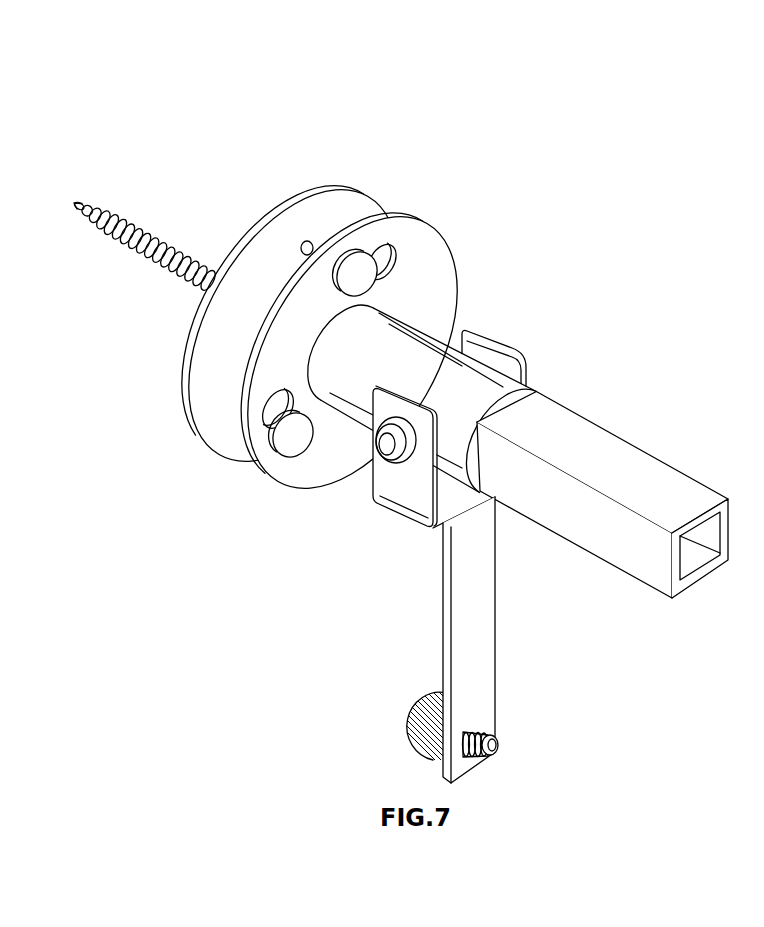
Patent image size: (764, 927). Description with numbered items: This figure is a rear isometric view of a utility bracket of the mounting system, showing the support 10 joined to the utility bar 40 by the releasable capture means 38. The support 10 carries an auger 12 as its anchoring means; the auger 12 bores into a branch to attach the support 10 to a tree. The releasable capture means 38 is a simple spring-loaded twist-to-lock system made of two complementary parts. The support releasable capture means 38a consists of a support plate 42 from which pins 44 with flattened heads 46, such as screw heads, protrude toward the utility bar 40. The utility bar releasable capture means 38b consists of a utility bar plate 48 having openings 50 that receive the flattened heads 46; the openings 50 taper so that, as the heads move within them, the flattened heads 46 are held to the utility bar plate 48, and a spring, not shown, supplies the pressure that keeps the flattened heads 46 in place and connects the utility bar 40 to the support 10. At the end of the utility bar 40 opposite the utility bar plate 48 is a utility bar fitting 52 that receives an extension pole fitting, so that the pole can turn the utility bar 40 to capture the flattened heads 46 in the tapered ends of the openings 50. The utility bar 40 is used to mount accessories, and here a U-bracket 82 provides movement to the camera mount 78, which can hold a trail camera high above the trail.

The support 10 is at (400, 398).
The auger 12 is at (146, 234).
The releasable capture means 38 is at (329, 275).
The support releasable capture means 38a is at (293, 255).
The utility bar releasable capture means 38b is at (375, 349).
The utility bar 40 is at (453, 343).
The support plate 42 is at (260, 242).
The pins 44 is at (326, 199).
The flattened heads 46 is at (293, 445).
The utility bar plate 48 is at (418, 242).
The openings 50 is at (270, 405).
The utility bar fitting 52 is at (668, 482).
The universal camera mount 78 is at (491, 741).
The U-bracket 82 is at (478, 642).